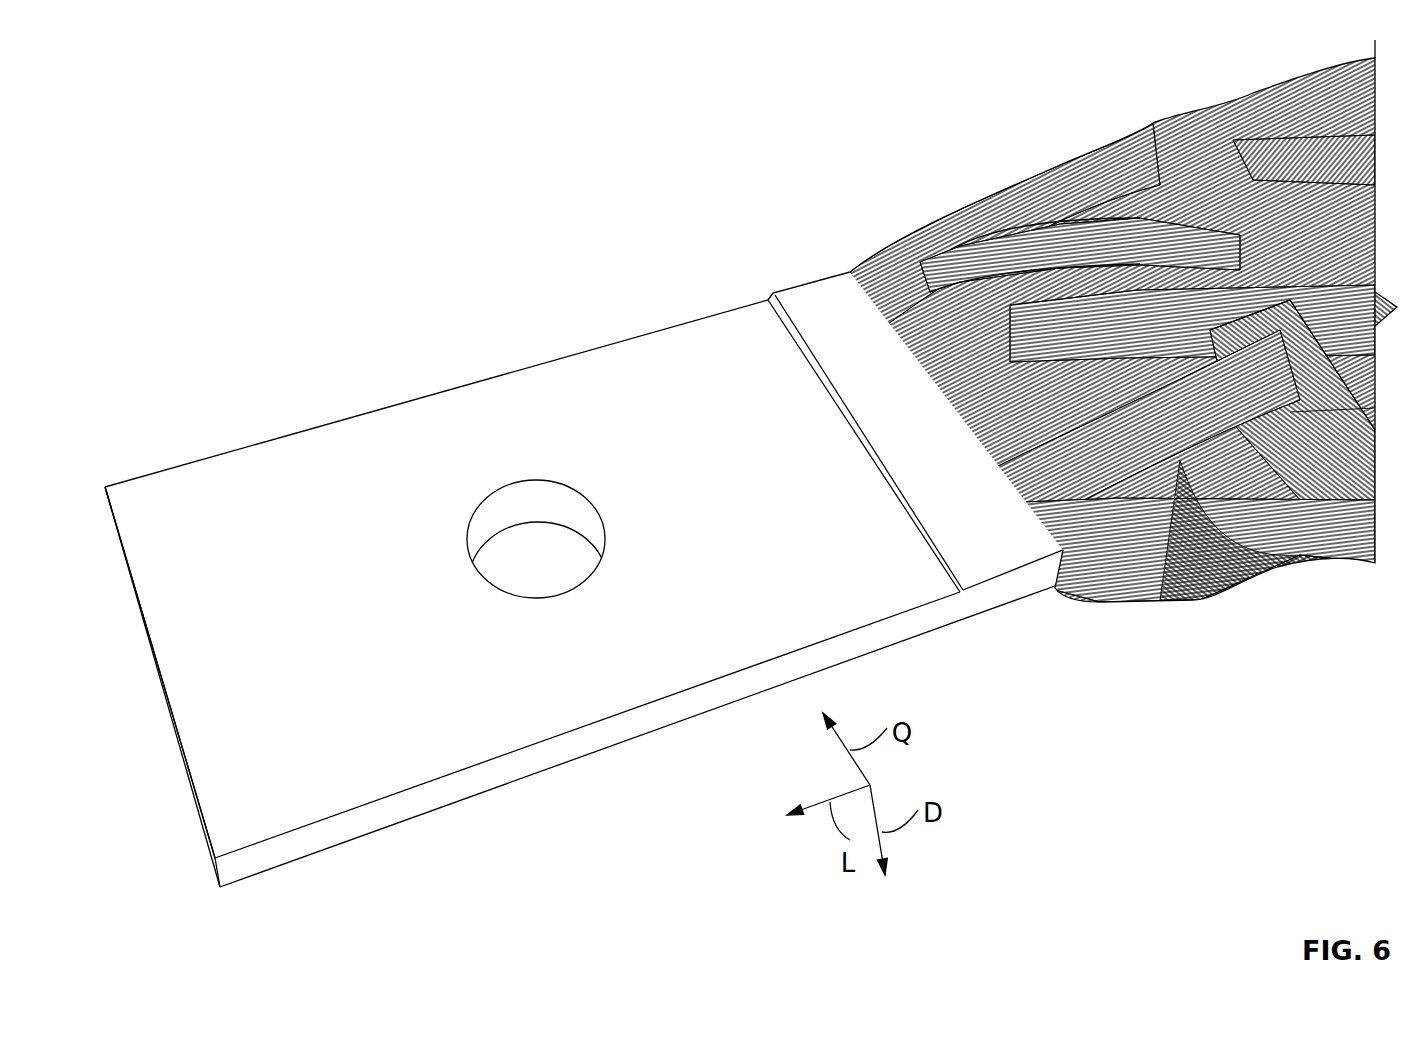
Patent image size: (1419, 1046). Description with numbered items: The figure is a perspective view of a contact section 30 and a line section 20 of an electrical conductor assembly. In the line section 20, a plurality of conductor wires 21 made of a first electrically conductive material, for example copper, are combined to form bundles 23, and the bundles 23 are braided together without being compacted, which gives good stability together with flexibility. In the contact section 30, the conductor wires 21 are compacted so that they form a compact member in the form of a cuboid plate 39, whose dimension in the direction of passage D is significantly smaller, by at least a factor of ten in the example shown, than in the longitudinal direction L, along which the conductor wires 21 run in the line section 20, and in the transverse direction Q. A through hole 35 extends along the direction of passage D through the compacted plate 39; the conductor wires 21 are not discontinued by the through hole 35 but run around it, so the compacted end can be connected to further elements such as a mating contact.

The line section 20 is at (1140, 410).
The conductor wires 21 is at (1070, 257).
The bundles 23 is at (1270, 345).
The contact section 30 is at (173, 560).
The through hole 35 is at (503, 522).
The plate 39 is at (142, 488).